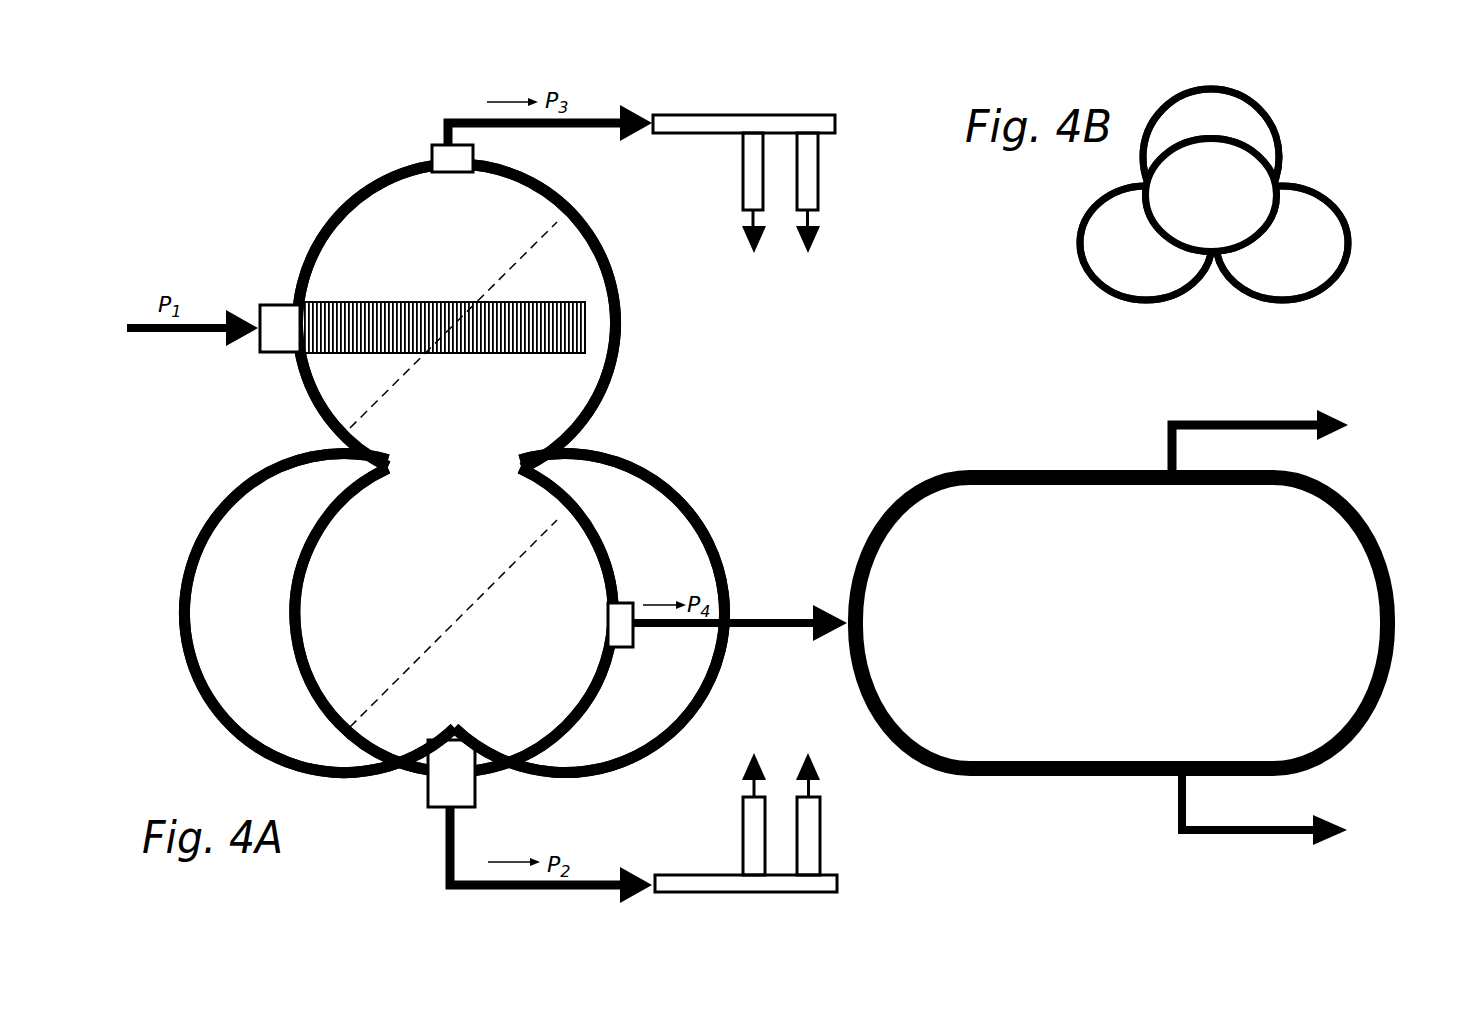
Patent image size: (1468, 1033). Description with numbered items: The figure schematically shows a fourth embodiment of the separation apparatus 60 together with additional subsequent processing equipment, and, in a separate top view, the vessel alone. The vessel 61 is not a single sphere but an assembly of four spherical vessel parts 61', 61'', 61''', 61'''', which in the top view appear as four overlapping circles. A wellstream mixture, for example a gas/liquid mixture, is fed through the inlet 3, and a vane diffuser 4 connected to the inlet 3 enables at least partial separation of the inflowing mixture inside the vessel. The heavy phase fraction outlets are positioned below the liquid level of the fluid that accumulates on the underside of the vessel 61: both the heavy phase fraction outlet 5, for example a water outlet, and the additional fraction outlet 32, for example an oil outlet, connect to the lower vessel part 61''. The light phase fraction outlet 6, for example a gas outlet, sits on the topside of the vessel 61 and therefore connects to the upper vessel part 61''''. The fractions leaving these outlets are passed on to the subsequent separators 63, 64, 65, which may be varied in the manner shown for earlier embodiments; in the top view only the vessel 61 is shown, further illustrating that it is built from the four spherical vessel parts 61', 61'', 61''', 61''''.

In FIG. 4A, the separation apparatus 60 is at (192, 155).
In FIG. 4A, the vessel 61 is at (470, 468).
In FIG. 4B, the vessel 61 is at (1256, 184).
In FIG. 4A, the spherical vessel part 61' is at (279, 613).
In FIG. 4B, the spherical vessel part 61' is at (1211, 122).
In FIG. 4A, the lower vessel part 61'' is at (415, 619).
In FIG. 4B, the lower vessel part 61'' is at (1112, 243).
In FIG. 4A, the spherical vessel part 61''' is at (627, 613).
In FIG. 4B, the spherical vessel part 61''' is at (1326, 243).
In FIG. 4A, the upper vessel part 61'''' is at (440, 311).
In FIG. 4B, the upper vessel part 61'''' is at (1248, 160).
In FIG. 4A, the inlet 3 is at (275, 303).
In FIG. 4A, the vane diffuser 4 is at (445, 302).
In FIG. 4A, the heavy phase fraction outlet 5 is at (428, 803).
In FIG. 4A, the light phase fraction outlet 6 is at (432, 152).
In FIG. 4A, the additional fraction outlet 32 is at (623, 648).
In FIG. 4A, the subsequent separator 63 is at (698, 151).
In FIG. 4A, the subsequent separator 64 is at (930, 464).
In FIG. 4A, the subsequent separator 65 is at (690, 857).